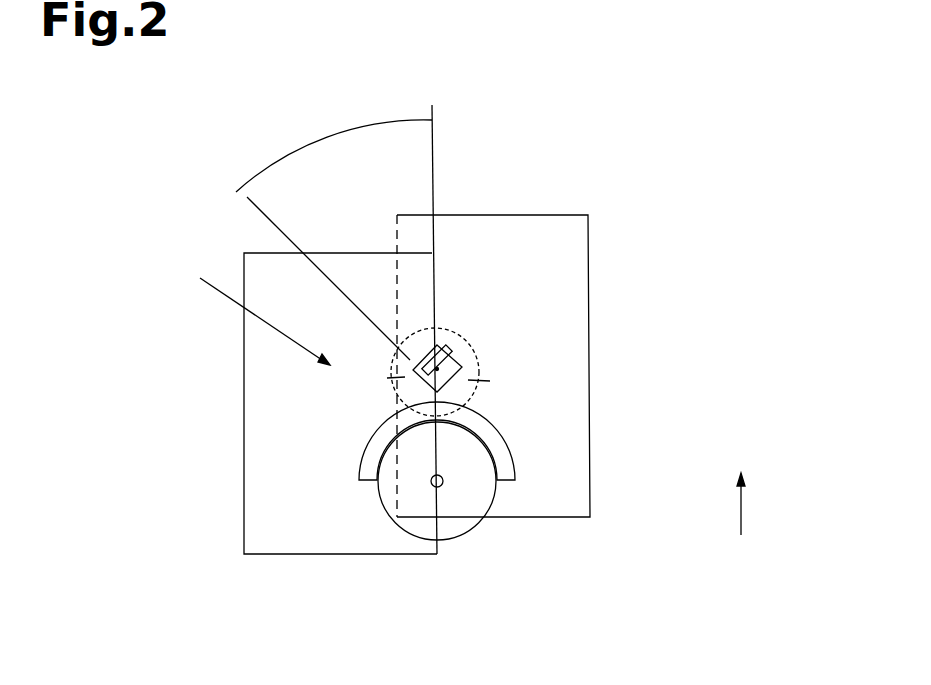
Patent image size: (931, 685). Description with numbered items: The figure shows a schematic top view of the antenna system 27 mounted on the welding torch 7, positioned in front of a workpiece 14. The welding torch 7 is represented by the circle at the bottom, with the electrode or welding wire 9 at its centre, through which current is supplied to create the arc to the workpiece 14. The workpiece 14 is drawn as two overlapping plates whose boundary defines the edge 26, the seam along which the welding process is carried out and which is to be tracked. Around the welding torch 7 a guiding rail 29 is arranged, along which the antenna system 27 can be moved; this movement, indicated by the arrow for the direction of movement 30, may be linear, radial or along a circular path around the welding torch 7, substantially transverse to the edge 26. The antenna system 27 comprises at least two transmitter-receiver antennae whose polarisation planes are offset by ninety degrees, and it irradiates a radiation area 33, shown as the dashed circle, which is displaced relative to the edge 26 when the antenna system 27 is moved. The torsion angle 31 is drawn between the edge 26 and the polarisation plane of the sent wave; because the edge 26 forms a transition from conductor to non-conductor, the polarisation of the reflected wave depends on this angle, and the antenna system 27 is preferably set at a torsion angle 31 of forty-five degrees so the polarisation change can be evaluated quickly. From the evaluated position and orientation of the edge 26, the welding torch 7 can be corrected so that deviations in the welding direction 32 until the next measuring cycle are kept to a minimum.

The welding torch 7 is at (465, 498).
The welding wire 9 is at (437, 487).
The workpiece 14 is at (280, 440).
The edge 26 is at (439, 242).
The antenna system 27 is at (242, 308).
The guiding rail 29 is at (516, 449).
The direction of movement 30 is at (477, 362).
The torsion angle 31 is at (315, 188).
The welding direction 32 is at (769, 504).
The radiation area 33 is at (445, 342).